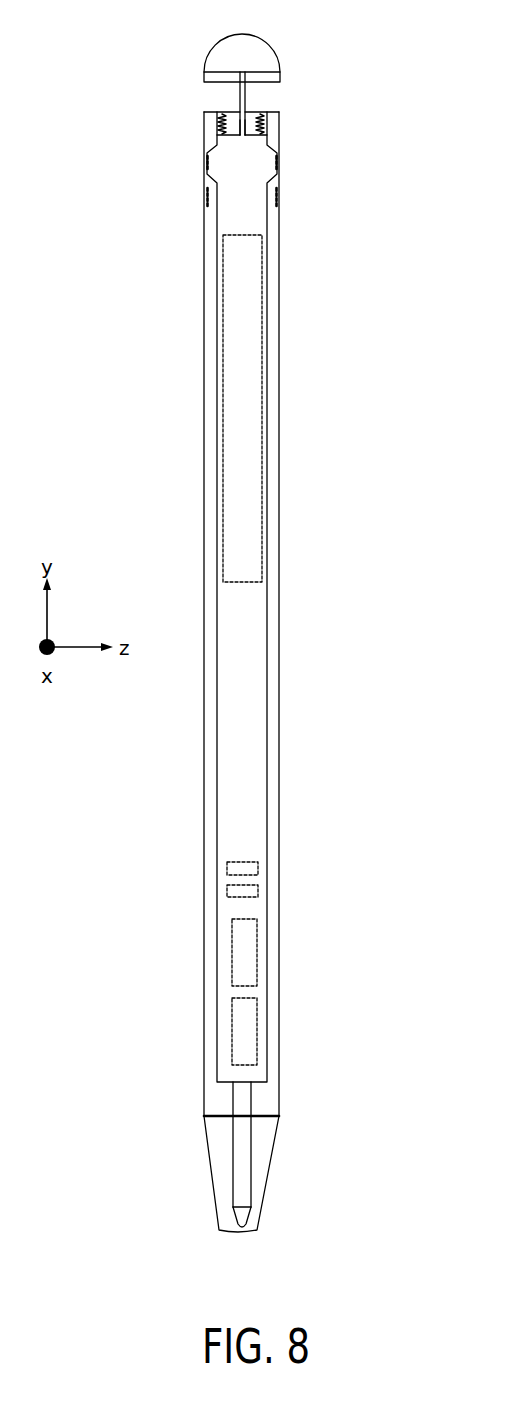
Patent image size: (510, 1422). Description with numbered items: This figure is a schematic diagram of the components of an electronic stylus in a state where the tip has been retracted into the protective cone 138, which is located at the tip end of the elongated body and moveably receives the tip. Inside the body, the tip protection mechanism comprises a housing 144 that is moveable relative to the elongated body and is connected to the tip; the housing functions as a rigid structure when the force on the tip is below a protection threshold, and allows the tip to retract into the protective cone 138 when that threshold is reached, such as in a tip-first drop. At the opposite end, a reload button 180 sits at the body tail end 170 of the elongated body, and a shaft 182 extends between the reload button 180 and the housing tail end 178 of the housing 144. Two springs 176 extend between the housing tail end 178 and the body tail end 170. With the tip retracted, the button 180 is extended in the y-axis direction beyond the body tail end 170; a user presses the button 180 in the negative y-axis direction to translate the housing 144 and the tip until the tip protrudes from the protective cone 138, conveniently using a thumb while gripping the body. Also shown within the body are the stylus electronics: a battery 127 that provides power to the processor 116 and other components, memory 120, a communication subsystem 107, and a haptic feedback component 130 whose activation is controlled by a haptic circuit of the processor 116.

The body tail end 170 is at (300, 115).
The reload button 180 is at (272, 50).
The housing tail end 178 is at (246, 134).
The shaft 182 is at (238, 98).
The springs 176 is at (220, 123).
The housing 144 is at (268, 701).
The battery 127 is at (228, 332).
The memory 120 is at (231, 871).
The processor 116 is at (231, 893).
The communication subsystem 107 is at (240, 965).
The haptic feedback component 130 is at (240, 1032).
The protective cone 138 is at (277, 1143).